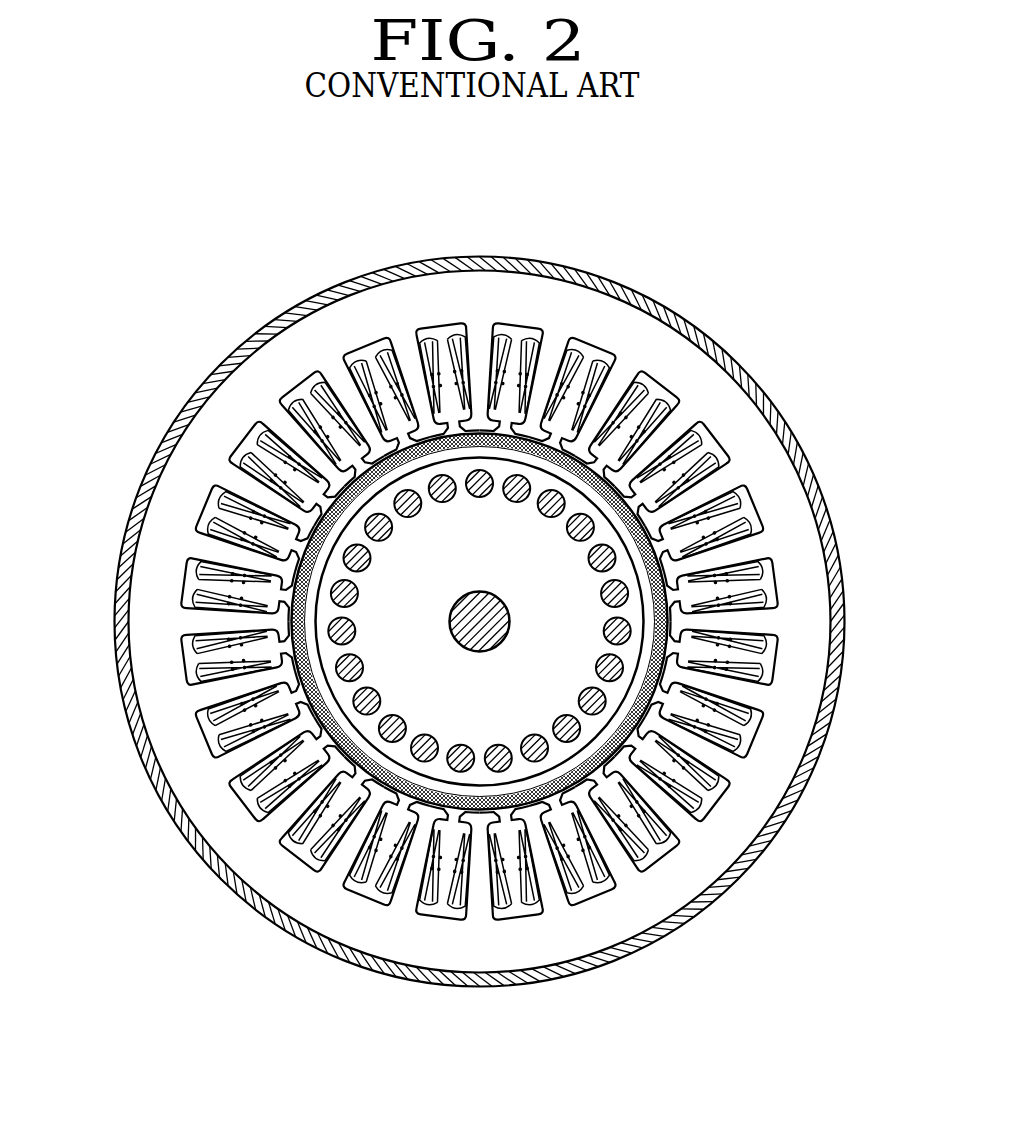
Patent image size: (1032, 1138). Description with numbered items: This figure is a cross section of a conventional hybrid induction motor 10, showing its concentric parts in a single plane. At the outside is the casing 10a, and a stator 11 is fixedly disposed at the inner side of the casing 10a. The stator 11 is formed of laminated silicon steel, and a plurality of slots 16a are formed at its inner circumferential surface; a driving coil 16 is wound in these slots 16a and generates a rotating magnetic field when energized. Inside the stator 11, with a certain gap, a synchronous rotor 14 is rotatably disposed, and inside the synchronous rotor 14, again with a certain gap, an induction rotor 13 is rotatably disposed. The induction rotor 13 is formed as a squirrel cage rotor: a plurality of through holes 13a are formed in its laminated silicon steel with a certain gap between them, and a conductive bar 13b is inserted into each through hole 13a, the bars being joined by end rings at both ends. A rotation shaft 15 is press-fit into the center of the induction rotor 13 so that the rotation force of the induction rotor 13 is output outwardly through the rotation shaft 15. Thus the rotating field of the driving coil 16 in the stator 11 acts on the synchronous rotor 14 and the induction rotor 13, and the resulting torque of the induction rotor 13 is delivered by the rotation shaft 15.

The hybrid induction motor 10 is at (197, 309).
The casing 10a is at (515, 985).
The stator 11 is at (175, 478).
The induction rotor 13 is at (593, 613).
The through hole 13a is at (425, 752).
The conductive bar 13b is at (340, 592).
The synchronous rotor 14 is at (315, 715).
The rotation shaft 15 is at (452, 627).
The driving coil 16 is at (183, 643).
The slot 16a is at (187, 662).